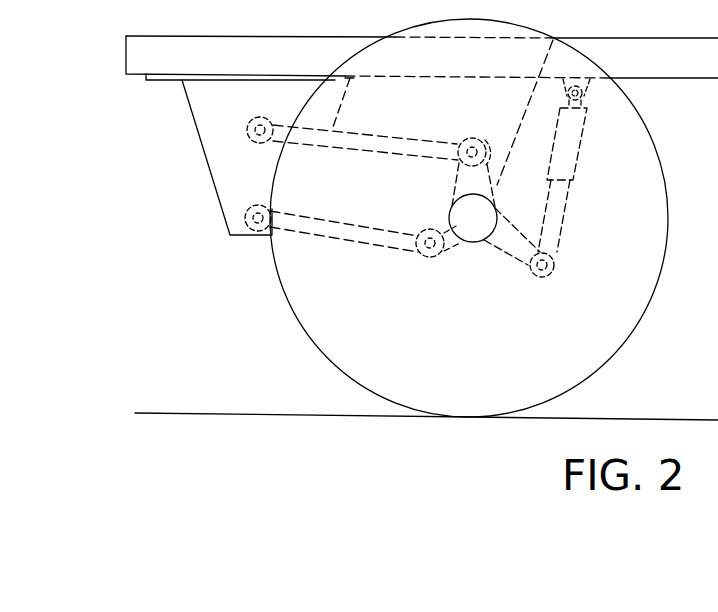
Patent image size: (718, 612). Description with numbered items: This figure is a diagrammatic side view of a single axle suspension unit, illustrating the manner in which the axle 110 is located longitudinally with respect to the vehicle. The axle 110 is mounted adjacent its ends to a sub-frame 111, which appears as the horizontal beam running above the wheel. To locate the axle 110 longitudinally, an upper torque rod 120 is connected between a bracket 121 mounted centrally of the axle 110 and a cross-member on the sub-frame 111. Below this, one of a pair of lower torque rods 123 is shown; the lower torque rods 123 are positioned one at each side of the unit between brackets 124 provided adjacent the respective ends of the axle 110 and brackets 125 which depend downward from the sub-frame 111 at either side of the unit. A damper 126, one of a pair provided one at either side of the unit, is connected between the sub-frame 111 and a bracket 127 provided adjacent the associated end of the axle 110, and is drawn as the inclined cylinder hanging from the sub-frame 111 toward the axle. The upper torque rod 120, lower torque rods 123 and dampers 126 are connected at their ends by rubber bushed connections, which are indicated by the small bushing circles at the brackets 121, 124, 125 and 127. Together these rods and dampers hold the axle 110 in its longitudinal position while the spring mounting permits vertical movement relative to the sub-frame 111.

The sub-frame 111 is at (245, 52).
The axle 110 is at (478, 243).
The upper torque rod 120 is at (378, 148).
The bracket 121 is at (553, 40).
The lower torque rod 123 is at (352, 224).
The bracket 124 is at (456, 257).
The bracket 125 is at (237, 191).
The damper 126 is at (565, 158).
The bracket 127 is at (524, 269).